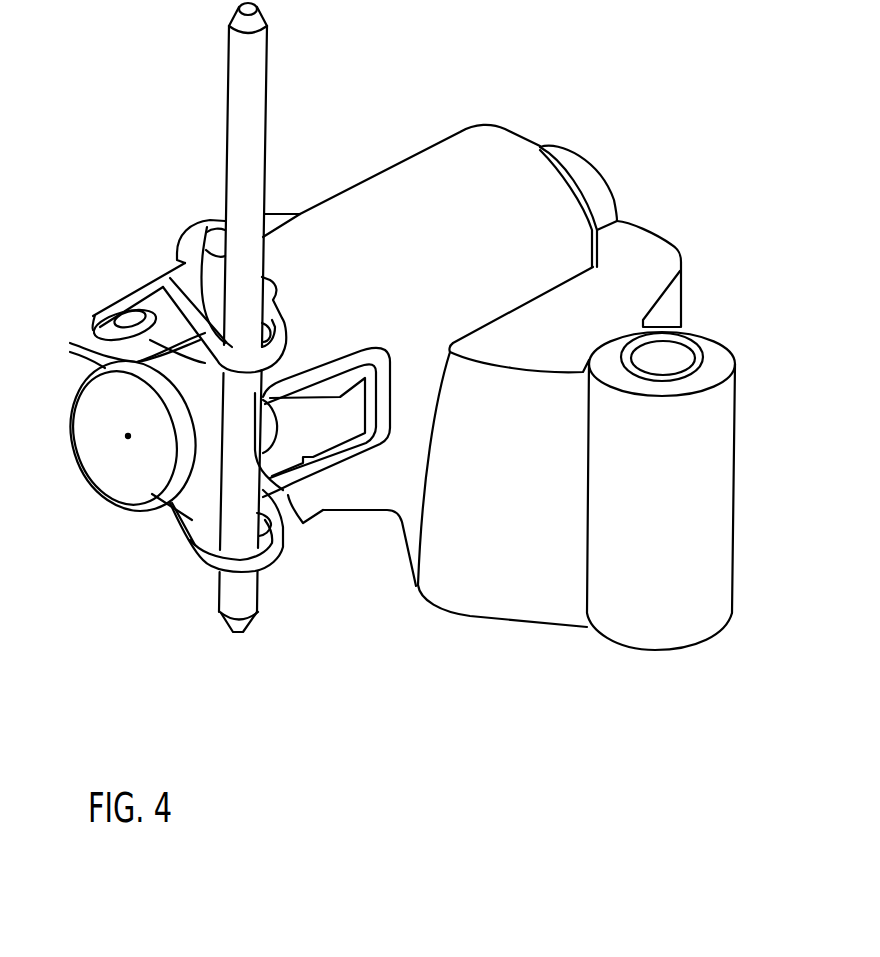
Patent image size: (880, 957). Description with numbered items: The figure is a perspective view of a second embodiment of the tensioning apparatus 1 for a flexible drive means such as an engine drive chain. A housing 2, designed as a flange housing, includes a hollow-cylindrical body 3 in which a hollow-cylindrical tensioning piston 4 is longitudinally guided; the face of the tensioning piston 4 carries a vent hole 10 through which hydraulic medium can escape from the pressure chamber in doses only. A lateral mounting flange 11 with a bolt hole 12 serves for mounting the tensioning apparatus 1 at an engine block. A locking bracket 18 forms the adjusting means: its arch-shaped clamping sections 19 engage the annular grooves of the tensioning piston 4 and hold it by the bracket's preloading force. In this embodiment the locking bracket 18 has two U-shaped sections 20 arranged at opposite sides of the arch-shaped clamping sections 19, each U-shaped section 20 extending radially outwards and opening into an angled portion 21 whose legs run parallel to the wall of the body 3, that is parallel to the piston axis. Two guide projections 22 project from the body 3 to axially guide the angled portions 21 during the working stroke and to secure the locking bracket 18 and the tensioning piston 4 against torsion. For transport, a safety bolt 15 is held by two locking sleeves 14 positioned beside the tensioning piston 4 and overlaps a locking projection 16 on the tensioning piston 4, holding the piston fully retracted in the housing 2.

The tensioning apparatus 1 is at (511, 98).
The housing 2 is at (636, 226).
The hollow-cylindrical body 3 is at (533, 170).
The tensioning piston 4 is at (88, 437).
The vent hole 10 is at (125, 438).
The mounting flange 11 is at (723, 503).
The bolt hole 12 is at (683, 355).
The locking sleeve 14 is at (207, 226).
The safety bolt 15 is at (262, 51).
The locking projection 16 is at (176, 343).
The locking bracket 18 is at (270, 477).
The arch-shaped clamping sections 19 is at (131, 319).
The U-shaped section 20 is at (88, 321).
The angled portion 21 is at (147, 284).
The guide projection 22 is at (367, 455).